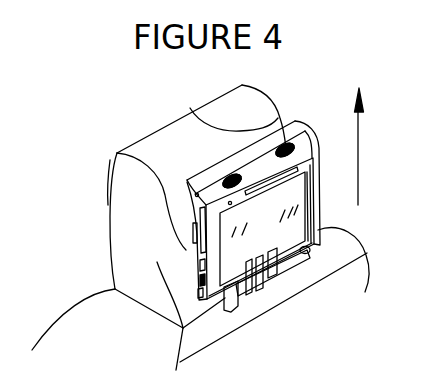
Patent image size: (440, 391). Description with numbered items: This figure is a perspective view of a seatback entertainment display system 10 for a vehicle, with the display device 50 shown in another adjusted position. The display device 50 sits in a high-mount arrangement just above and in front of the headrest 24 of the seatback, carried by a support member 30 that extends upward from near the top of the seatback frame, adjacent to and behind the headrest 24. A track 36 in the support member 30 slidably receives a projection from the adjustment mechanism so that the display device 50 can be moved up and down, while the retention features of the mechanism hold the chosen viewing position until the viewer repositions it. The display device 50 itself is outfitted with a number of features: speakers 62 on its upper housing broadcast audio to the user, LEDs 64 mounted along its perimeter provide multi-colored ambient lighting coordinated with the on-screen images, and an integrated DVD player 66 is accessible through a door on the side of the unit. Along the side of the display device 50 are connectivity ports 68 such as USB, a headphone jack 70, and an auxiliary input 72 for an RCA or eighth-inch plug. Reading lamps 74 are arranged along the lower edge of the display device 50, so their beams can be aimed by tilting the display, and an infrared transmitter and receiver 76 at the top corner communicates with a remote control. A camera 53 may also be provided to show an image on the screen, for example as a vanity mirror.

The seatback entertainment display system 10 is at (137, 90).
The headrest 24 is at (130, 228).
The support member 30 is at (268, 287).
The track 36 is at (248, 302).
The display device 50 is at (303, 195).
The camera 53 is at (184, 187).
The speakers 62 is at (232, 181).
The LEDs 64 is at (111, 167).
The DVD player 66 is at (193, 239).
The connectivity ports 68 is at (200, 278).
The headphone jack 70 is at (199, 286).
The auxiliary input 72 is at (183, 330).
The reading lamps 74 is at (246, 303).
The infrared transmitter and receiver 76 is at (304, 128).